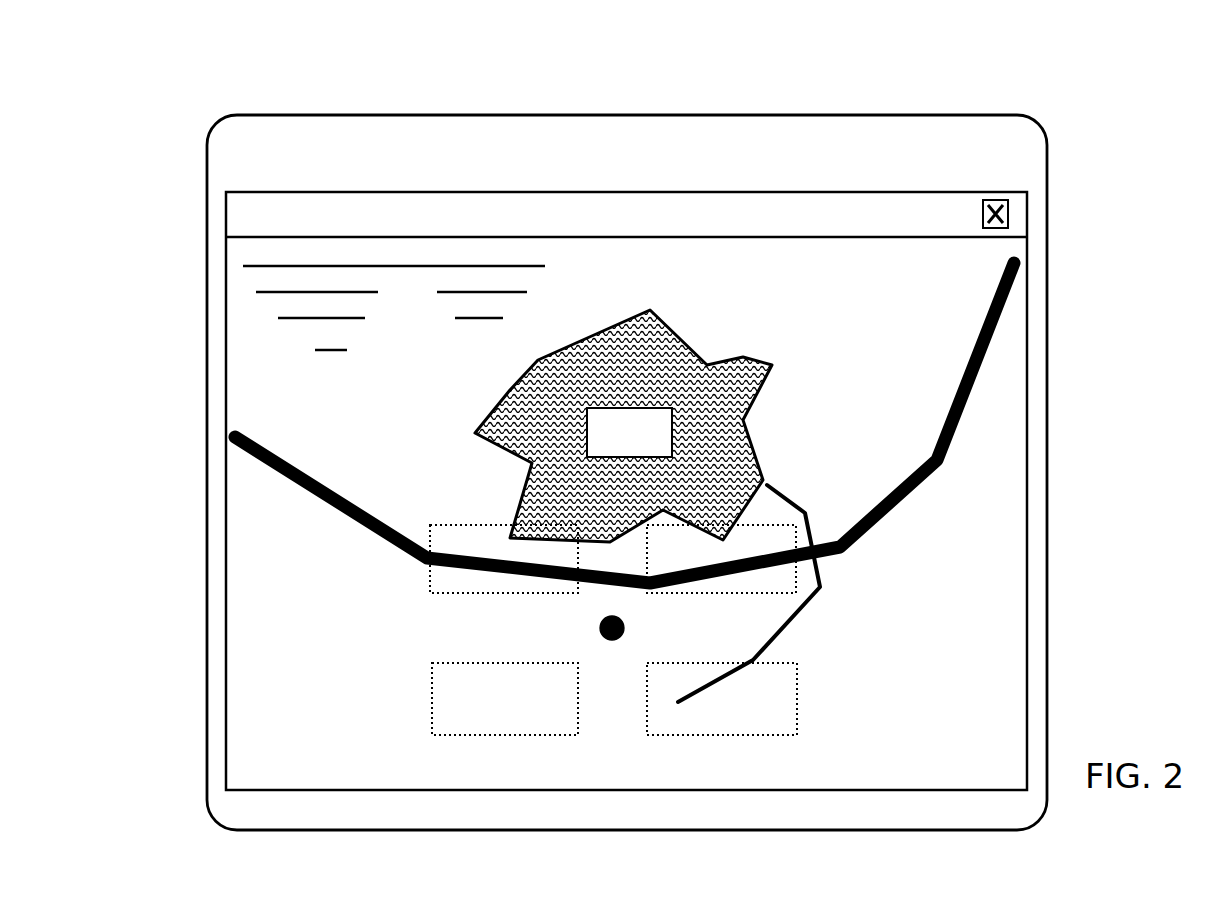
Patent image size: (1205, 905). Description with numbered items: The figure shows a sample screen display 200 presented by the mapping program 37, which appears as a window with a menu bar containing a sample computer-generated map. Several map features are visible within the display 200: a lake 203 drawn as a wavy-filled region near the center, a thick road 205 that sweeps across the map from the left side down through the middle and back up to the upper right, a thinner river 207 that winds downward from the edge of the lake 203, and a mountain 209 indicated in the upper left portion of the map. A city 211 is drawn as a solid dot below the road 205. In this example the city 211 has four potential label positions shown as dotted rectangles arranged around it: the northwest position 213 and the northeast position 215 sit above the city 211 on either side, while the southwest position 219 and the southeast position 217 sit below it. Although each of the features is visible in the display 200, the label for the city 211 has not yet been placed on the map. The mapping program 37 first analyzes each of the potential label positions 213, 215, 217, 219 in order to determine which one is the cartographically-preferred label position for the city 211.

The screen display 200 is at (629, 82).
The mapping program 37 is at (318, 192).
The mountain 209 is at (560, 286).
The lake 203 is at (515, 390).
The road 205 is at (290, 462).
The river 207 is at (798, 618).
The city 211 is at (598, 630).
The northwest position 213 is at (458, 595).
The northeast position 215 is at (682, 593).
The southeast position 217 is at (660, 737).
The southwest position 219 is at (443, 736).